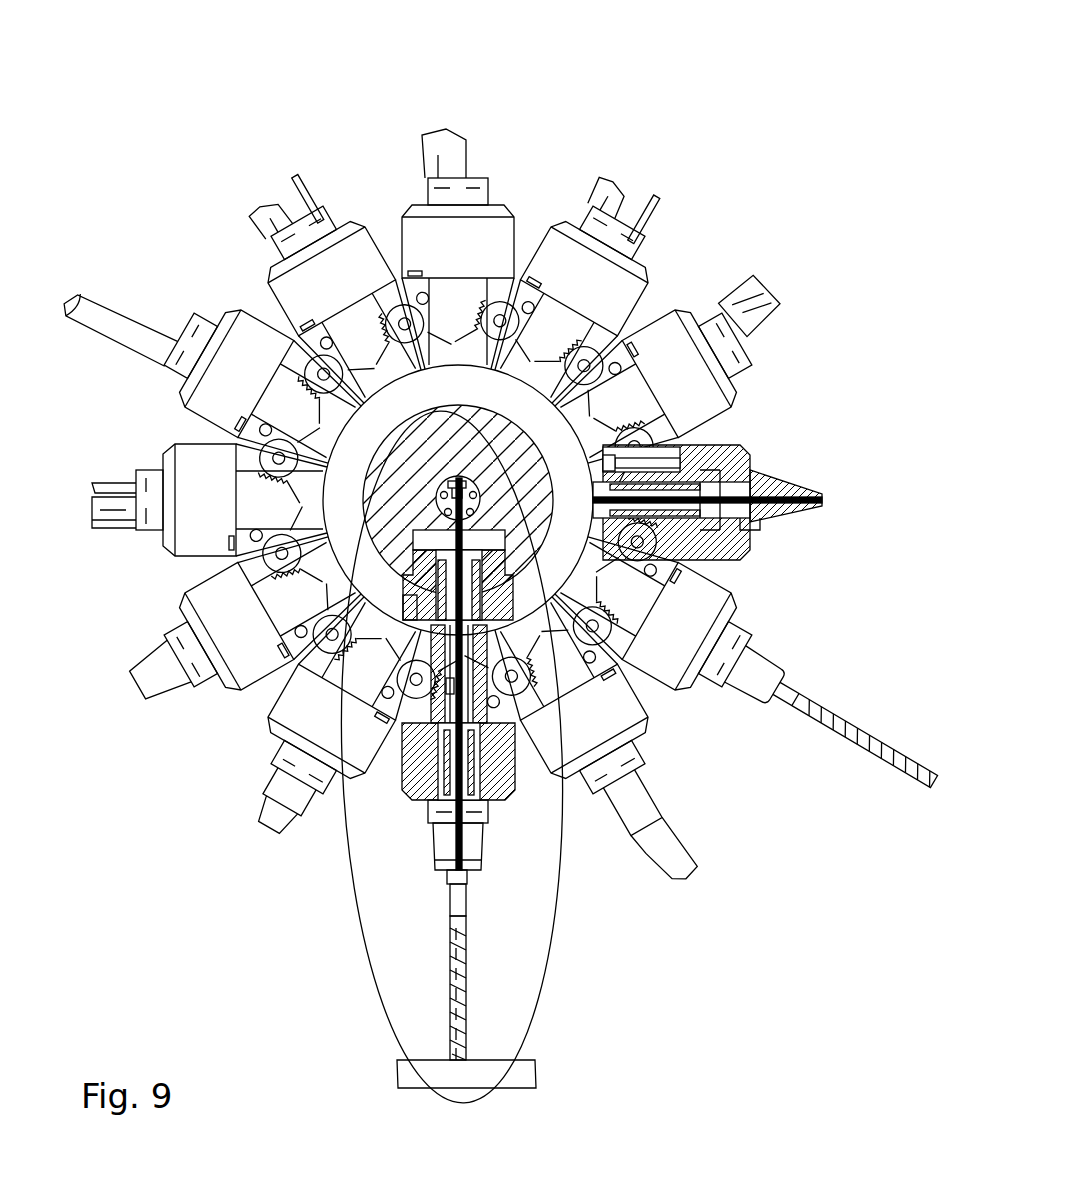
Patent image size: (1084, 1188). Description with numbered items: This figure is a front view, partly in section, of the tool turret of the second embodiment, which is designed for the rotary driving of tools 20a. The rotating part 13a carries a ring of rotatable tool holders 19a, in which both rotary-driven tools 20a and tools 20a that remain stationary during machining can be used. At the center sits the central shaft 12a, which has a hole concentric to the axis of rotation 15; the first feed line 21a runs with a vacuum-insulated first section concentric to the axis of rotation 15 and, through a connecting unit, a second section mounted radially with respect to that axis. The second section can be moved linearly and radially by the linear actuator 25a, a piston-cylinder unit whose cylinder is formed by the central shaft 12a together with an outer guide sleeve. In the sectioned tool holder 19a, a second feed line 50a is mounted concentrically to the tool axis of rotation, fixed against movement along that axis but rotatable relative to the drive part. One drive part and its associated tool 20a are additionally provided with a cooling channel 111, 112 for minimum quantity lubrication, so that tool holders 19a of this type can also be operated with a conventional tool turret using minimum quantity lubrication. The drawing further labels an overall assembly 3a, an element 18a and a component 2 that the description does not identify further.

The tool turret 3a is at (617, 110).
The rotating part 13a is at (278, 338).
The central shaft 12a is at (430, 422).
The axis of rotation 15 is at (459, 482).
The clamping device 18a is at (685, 457).
The cooling channel 111 is at (725, 460).
The tool holder 19a is at (753, 467).
The tool 20a is at (813, 492).
The cooling channel 112 is at (770, 530).
The first feed line 21a is at (480, 542).
The linear actuator 25a is at (529, 585).
The second feed line 50a is at (396, 597).
The workpiece 2 is at (520, 1072).